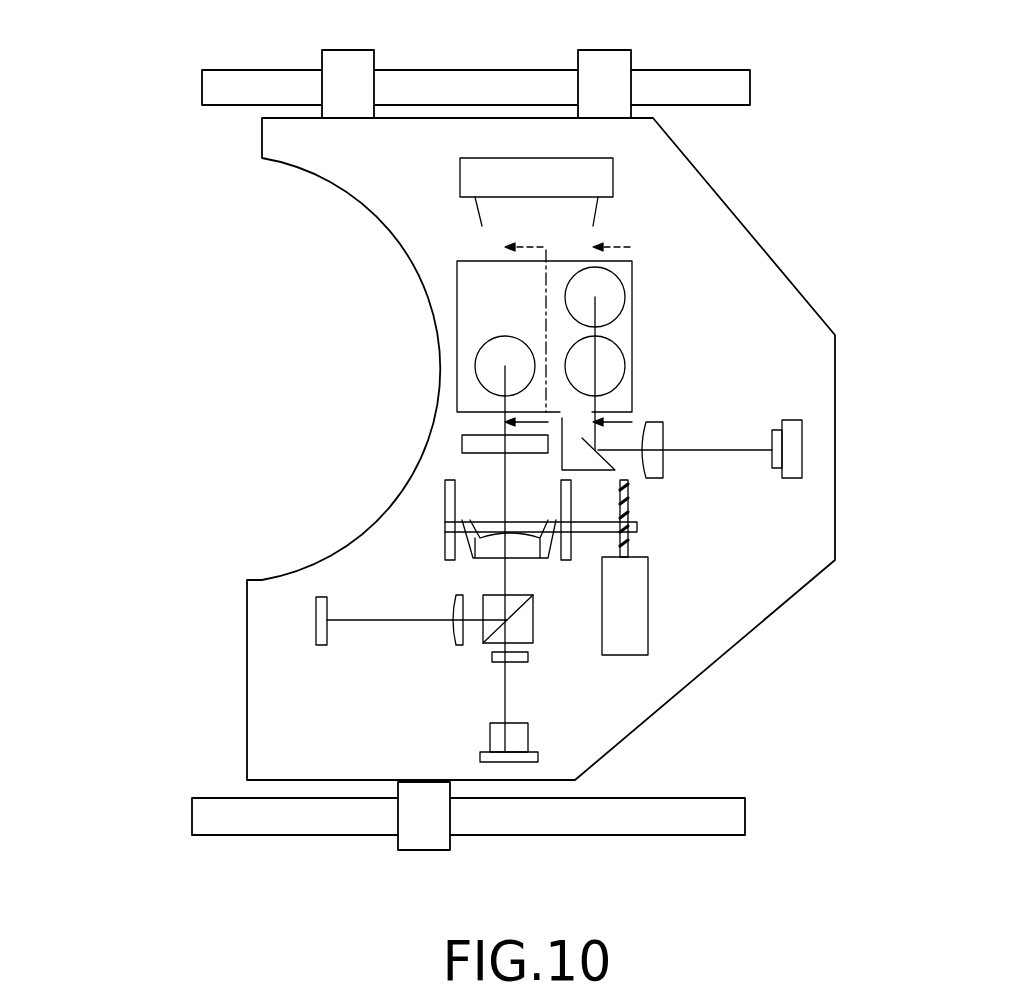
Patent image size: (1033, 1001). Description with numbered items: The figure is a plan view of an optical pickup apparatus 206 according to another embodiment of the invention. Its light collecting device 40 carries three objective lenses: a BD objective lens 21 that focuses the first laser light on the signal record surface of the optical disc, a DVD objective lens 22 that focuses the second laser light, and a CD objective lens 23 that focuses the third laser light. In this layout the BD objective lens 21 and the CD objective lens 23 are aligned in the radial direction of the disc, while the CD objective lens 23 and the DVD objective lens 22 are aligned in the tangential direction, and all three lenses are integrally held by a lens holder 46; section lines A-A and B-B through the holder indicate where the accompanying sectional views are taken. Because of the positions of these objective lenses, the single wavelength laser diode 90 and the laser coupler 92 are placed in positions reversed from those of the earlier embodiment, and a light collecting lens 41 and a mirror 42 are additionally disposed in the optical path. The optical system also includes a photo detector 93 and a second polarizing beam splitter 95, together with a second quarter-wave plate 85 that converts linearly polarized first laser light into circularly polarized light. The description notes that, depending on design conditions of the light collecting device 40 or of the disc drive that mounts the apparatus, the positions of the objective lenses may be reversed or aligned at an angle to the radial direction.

The optical pickup apparatus 206 is at (121, 80).
The light collecting device 40 is at (617, 307).
The lens holder 46 is at (478, 322).
The BD objective lens 21 is at (487, 366).
The DVD objective lens 22 is at (595, 297).
The CD objective lens 23 is at (615, 366).
The second λ/4 plate 85 is at (467, 437).
The mirror 42 is at (562, 470).
The light collecting lens 41 is at (655, 474).
The laser coupler 92 is at (793, 458).
The photo detector 93 is at (316, 604).
The second polarizing beam splitter 95 is at (533, 632).
The single wavelength laser diode 90 is at (513, 760).